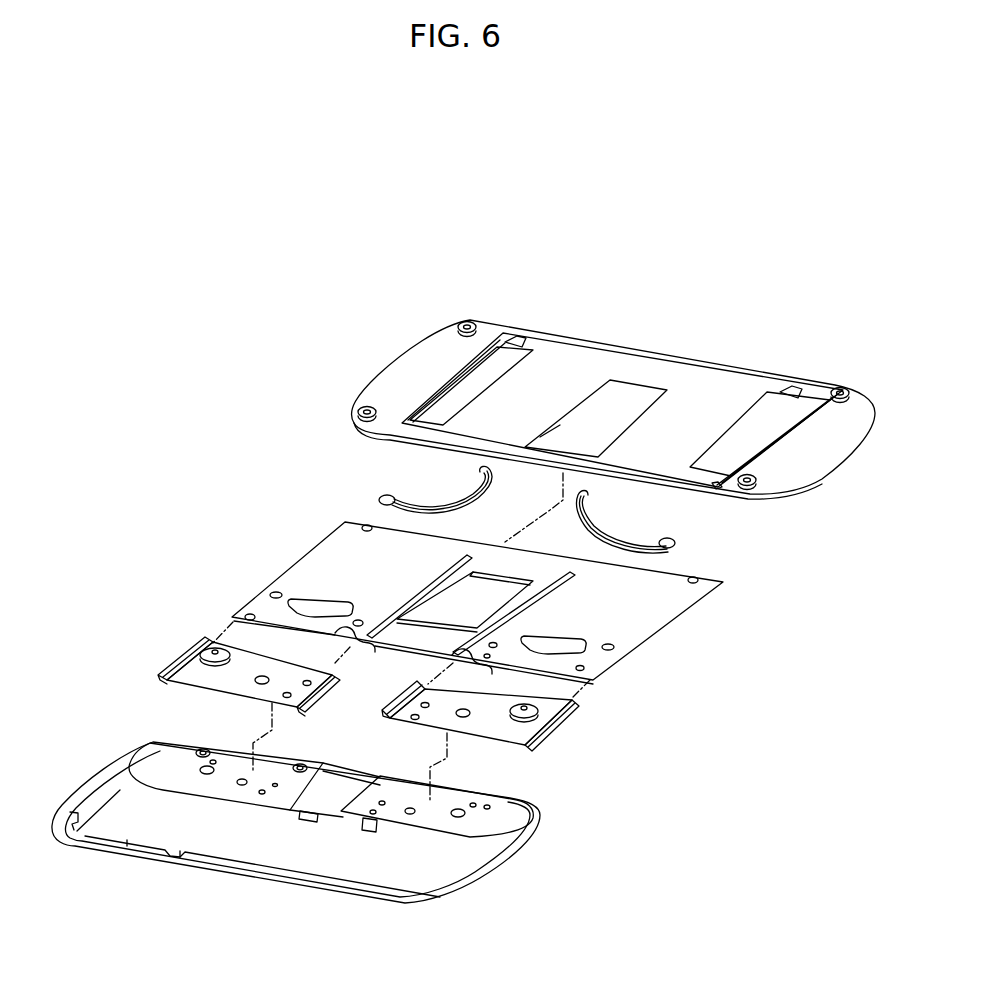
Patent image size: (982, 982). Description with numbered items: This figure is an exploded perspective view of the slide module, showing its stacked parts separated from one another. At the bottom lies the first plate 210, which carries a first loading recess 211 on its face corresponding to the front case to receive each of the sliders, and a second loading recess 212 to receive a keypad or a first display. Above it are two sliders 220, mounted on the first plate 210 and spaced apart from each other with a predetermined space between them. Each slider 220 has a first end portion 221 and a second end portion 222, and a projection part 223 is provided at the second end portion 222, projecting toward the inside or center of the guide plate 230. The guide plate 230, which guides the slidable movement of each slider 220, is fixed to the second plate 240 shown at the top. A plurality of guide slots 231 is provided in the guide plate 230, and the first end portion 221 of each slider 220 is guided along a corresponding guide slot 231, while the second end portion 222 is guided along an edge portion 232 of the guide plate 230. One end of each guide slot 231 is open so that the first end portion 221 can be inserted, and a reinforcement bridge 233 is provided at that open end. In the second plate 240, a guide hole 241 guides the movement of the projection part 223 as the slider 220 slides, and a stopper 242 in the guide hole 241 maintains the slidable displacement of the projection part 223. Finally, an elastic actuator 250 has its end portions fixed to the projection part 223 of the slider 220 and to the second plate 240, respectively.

The first plate 210 is at (332, 817).
The first loading recess 211 is at (228, 762).
The second loading recess 212 is at (320, 868).
The slider 220 is at (398, 665).
The first end portion 221 is at (327, 692).
The second end portion 222 is at (180, 665).
The projection part 223 is at (218, 648).
The guide plate 230 is at (503, 591).
The guide slot 231 is at (440, 568).
The edge portion 232 is at (310, 550).
The reinforcement bridge 233 is at (345, 640).
The second plate 240 is at (613, 370).
The guide hole 241 is at (483, 367).
The stopper 242 is at (523, 340).
The elastic actuator 250 is at (380, 498).